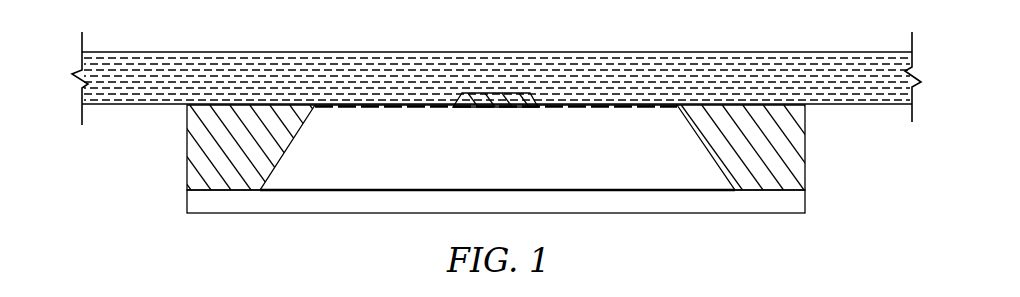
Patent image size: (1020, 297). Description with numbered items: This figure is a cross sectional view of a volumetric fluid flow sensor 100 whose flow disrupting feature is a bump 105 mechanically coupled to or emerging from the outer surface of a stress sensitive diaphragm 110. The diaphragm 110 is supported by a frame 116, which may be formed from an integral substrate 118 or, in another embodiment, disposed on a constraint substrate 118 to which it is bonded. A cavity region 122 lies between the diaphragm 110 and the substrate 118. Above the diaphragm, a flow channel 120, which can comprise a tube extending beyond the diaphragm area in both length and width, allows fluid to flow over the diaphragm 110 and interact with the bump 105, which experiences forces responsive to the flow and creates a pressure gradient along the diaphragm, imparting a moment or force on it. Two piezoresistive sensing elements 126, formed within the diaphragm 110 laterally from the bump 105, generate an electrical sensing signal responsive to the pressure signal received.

The volumetric fluid flow sensor 100 is at (141, 231).
The bump 105 is at (505, 108).
The stress sensitive diaphragm 110 is at (410, 108).
The frame 116 is at (793, 150).
The substrate 118 is at (773, 205).
The flow channel 120 is at (542, 60).
The cavity region 122 is at (486, 176).
The piezoresistive sensing elements 126 is at (353, 107).